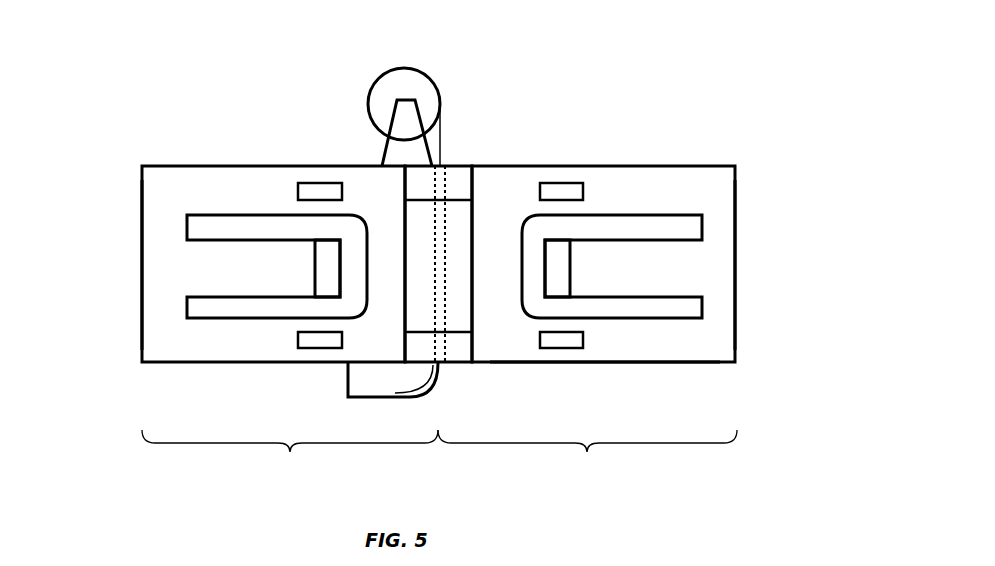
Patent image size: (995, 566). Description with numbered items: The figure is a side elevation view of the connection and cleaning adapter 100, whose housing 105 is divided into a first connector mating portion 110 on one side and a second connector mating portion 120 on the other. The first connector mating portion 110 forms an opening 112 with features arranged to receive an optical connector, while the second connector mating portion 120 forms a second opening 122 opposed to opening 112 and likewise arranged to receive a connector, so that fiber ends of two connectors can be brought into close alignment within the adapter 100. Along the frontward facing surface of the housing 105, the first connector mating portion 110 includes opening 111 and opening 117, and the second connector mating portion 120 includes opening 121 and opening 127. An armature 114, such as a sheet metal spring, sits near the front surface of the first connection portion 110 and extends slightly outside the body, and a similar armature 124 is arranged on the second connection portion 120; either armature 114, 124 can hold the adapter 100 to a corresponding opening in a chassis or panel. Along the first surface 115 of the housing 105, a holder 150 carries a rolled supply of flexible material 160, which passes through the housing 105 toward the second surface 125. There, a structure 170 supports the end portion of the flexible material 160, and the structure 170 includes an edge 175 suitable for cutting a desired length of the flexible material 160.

The adapter 100 is at (104, 86).
The housing 105 is at (140, 198).
The first connector mating portion 110 is at (239, 302).
The opening 111 is at (298, 191).
The opening 112 is at (124, 282).
The armature 114 is at (277, 266).
The first surface 115 is at (688, 158).
The opening 117 is at (322, 341).
The second connector mating portion 120 is at (639, 297).
The opening 121 is at (554, 191).
The second opening 122 is at (757, 265).
The armature 124 is at (612, 266).
The second surface 125 is at (637, 372).
The opening 127 is at (570, 341).
The holder 150 is at (386, 150).
The supply of flexible material 160 is at (410, 58).
The structure 170 is at (392, 392).
The edge 175 is at (332, 403).